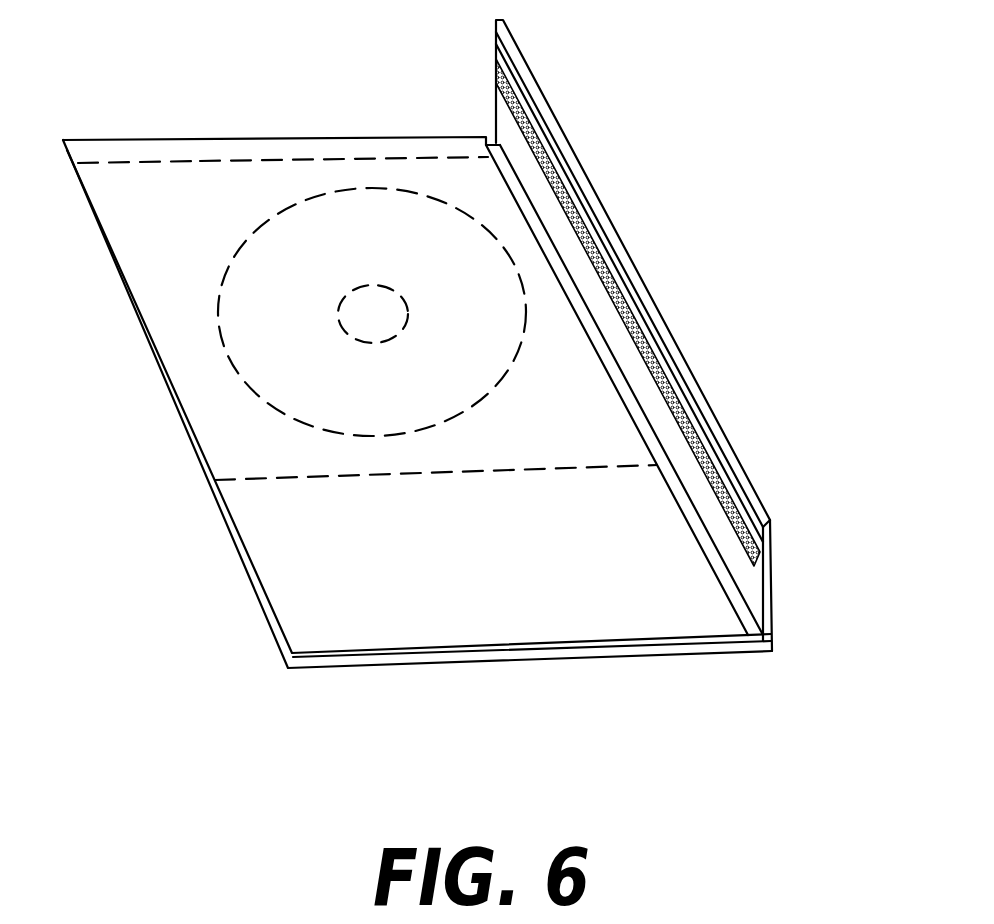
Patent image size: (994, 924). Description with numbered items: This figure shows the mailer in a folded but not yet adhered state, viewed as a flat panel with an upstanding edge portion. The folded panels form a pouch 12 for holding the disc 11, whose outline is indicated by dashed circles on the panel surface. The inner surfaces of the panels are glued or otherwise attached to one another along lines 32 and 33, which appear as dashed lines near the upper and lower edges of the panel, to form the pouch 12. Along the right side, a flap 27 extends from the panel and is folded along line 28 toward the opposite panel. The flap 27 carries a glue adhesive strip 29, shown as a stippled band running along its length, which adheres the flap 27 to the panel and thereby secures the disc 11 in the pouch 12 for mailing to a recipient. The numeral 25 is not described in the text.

The disc 11 is at (390, 190).
The pouch 12 is at (248, 161).
The tray base panel 25 is at (545, 567).
The flap 27 is at (771, 567).
The line 28 is at (764, 627).
The glue adhesive strip 29 is at (656, 353).
The line 32 is at (157, 160).
The line 33 is at (258, 481).